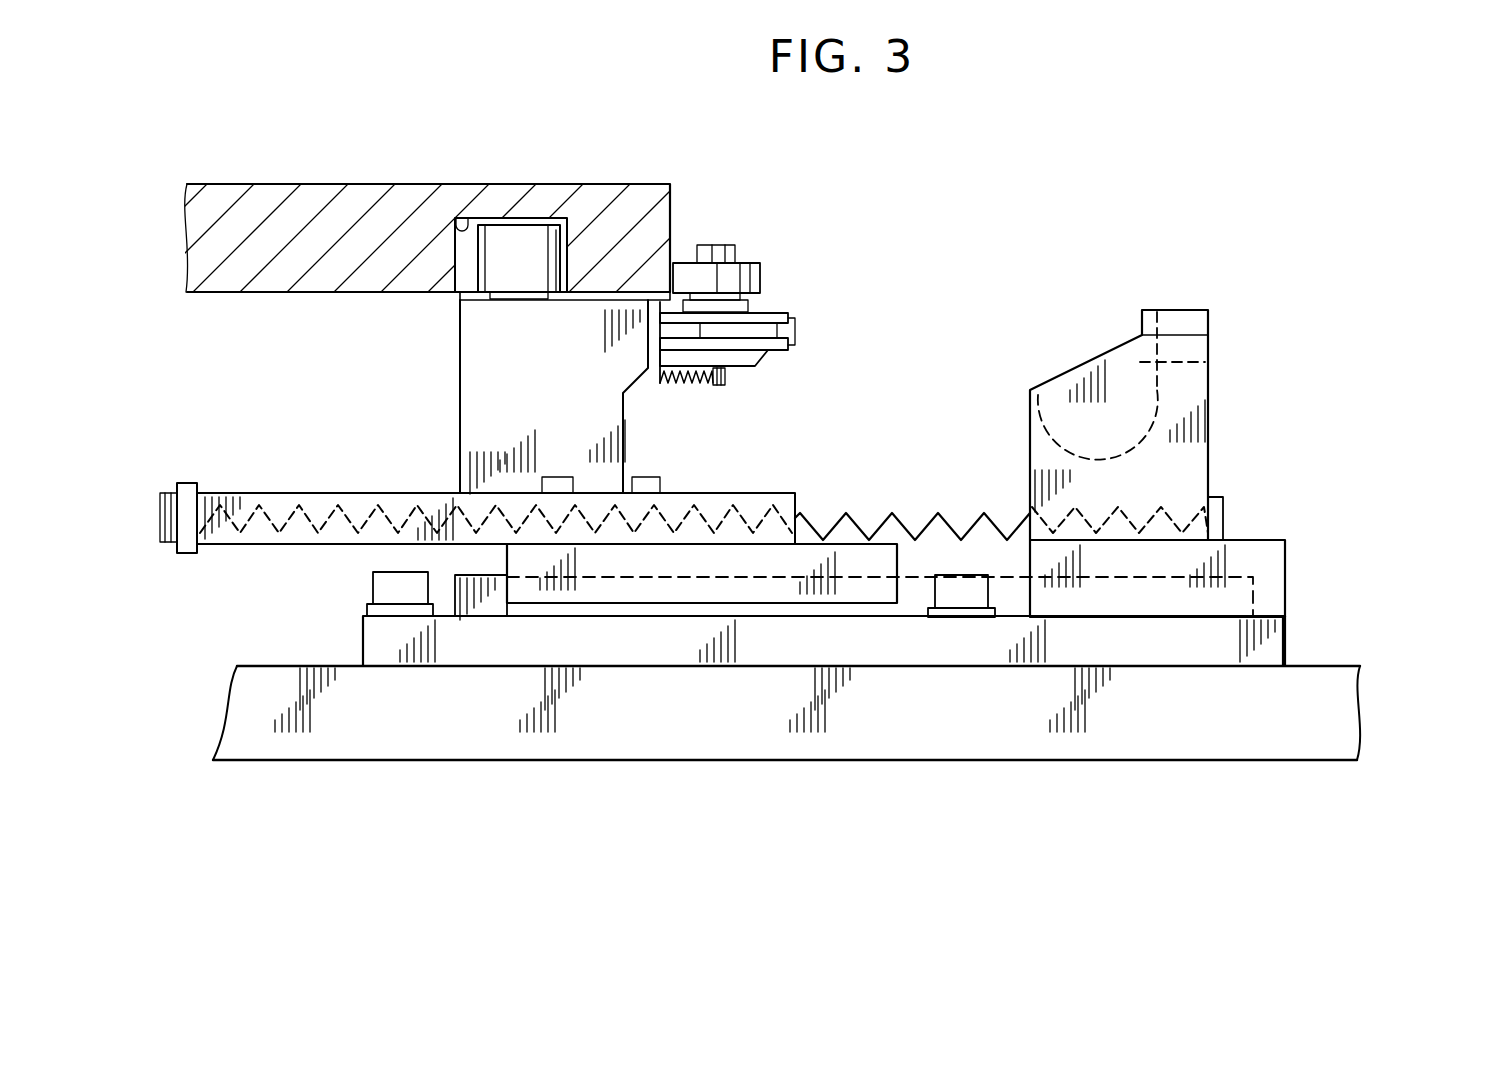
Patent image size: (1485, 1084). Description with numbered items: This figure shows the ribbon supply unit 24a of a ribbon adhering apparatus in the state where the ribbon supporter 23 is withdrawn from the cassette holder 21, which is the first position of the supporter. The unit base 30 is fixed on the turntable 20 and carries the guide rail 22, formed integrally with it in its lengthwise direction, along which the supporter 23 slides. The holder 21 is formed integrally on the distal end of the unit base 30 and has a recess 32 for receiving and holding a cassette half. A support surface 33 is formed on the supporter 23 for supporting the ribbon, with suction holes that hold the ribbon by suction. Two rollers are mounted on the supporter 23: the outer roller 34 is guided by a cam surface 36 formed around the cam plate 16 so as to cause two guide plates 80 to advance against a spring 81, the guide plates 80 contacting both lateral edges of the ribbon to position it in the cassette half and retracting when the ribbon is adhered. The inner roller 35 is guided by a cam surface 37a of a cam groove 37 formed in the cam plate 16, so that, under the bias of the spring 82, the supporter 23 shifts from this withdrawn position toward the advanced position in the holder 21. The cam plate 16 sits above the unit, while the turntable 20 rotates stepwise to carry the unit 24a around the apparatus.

The cam plate 16 is at (627, 184).
The turntable 20 is at (468, 745).
The cassette holder 21 is at (1210, 422).
The guide rail 22 is at (913, 608).
The ribbon supporter 23 is at (458, 390).
The ribbon supply unit 24a is at (1302, 558).
The unit base 30 is at (1275, 648).
The recess 32 is at (1215, 360).
The support surface 33 is at (790, 330).
The outer roller 34 is at (750, 263).
The inner roller 35 is at (525, 245).
The cam surface 36 is at (672, 205).
The cam groove 37 is at (458, 222).
The cam surface 37a is at (560, 262).
The guide plates 80 is at (775, 312).
The spring 81 is at (683, 384).
The spring 82 is at (843, 514).